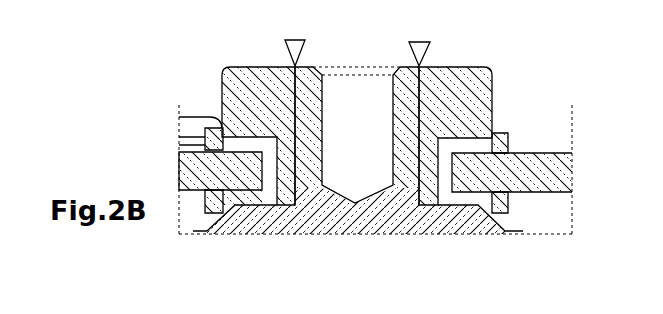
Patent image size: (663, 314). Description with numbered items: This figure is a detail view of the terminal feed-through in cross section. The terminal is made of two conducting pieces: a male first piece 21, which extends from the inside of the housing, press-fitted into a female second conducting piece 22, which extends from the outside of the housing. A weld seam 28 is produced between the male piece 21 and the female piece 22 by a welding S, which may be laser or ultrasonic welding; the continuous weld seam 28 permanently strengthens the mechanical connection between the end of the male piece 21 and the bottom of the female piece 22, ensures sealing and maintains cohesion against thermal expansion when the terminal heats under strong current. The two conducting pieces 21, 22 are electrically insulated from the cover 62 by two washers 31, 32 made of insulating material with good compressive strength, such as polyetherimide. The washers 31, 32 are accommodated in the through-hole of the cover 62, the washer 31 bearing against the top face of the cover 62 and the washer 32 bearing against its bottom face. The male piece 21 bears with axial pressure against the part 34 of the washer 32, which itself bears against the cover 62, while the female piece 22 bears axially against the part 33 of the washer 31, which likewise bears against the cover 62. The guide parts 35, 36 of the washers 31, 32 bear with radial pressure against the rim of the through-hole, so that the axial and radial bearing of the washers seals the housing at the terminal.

The male first piece 21 is at (313, 108).
The female second conducting piece 22 is at (478, 98).
The weld seam 28 is at (308, 88).
The washer 31 is at (507, 145).
The washer 32 is at (510, 203).
The part of the washer 33 is at (240, 113).
The part of the washer 34 is at (243, 210).
The guide part 35 is at (177, 162).
The guide part 36 is at (275, 180).
The cover 62 is at (552, 183).
The welding S is at (288, 55).